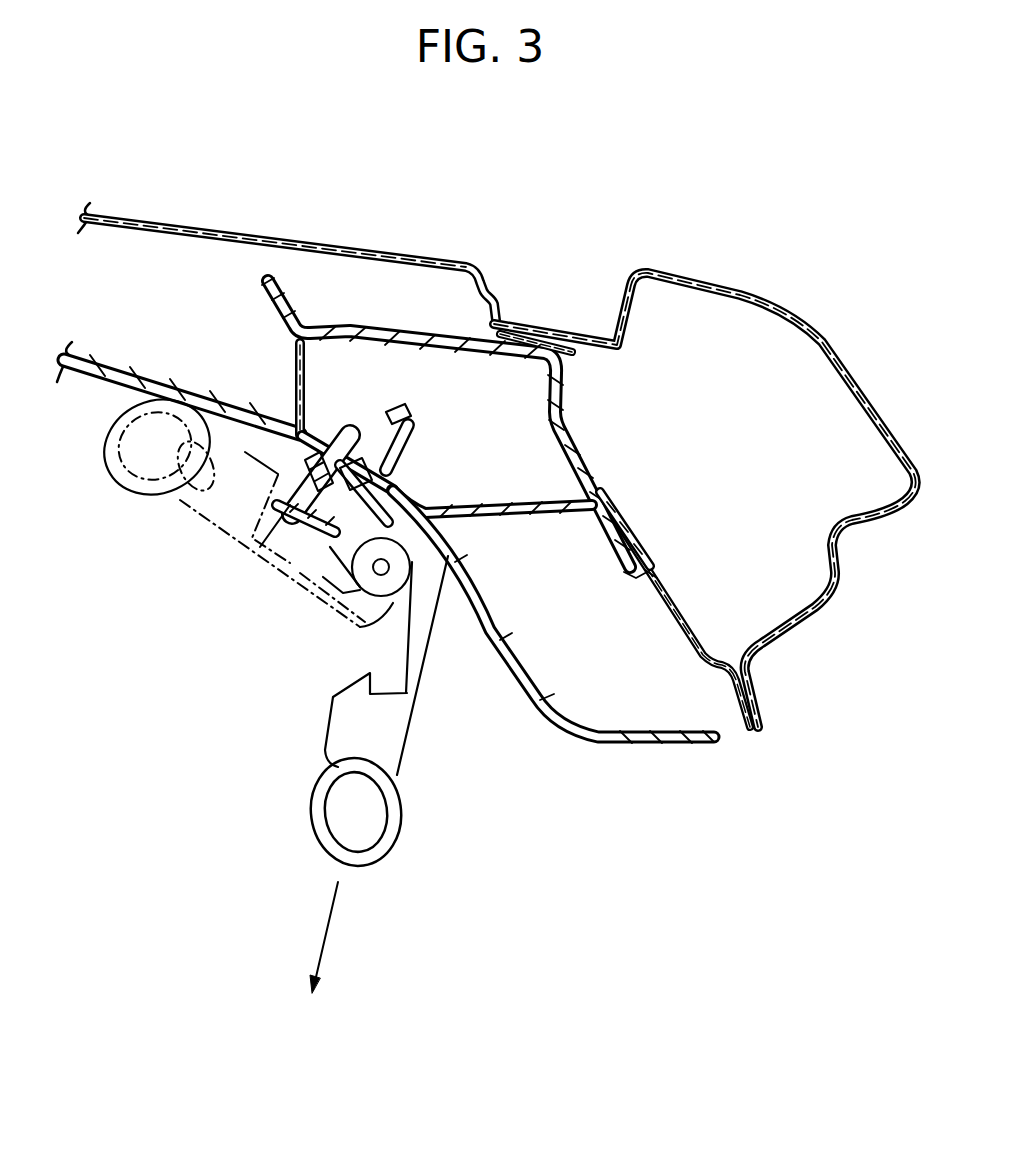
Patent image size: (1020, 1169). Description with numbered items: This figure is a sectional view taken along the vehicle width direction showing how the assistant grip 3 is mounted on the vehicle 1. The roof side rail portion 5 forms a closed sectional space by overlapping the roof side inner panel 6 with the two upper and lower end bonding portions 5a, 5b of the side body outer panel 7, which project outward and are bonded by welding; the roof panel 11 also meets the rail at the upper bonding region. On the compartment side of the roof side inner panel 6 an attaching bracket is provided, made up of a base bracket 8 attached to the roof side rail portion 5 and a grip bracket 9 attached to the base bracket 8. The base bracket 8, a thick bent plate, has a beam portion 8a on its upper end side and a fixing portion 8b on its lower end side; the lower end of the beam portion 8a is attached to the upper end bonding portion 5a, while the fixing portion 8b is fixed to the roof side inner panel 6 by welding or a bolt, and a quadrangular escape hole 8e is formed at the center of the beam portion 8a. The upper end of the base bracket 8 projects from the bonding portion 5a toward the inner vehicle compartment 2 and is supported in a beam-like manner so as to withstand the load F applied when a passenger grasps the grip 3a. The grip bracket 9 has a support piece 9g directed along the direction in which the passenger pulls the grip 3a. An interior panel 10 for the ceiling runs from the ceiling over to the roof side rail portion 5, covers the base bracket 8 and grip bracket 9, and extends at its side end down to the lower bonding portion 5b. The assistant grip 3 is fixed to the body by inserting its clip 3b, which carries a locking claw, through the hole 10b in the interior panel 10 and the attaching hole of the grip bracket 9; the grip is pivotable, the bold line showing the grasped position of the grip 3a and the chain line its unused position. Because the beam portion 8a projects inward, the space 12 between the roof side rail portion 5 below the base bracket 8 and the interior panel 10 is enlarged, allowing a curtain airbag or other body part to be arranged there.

The vehicle 1 is at (545, 244).
The inner vehicle compartment 2 is at (256, 604).
The assistant grip 3 is at (370, 578).
The grip 3a is at (412, 743).
The clip 3b is at (425, 408).
The roof side rail portion 5 is at (698, 275).
The upper end bonding portion 5a is at (551, 323).
The lower end bonding portion 5b is at (760, 694).
The roof side inner panel 6 is at (684, 610).
The side body outer panel 7 is at (812, 335).
The base bracket 8 is at (468, 390).
The beam portion 8a is at (353, 334).
The fixing portion 8b is at (618, 515).
The escape hole 8e is at (397, 330).
The grip bracket 9 is at (408, 459).
The support piece 9g is at (297, 369).
The interior panel 10 is at (553, 625).
The hole 10b is at (392, 487).
The roof panel 11 is at (266, 235).
The space 12 is at (606, 635).
The load F is at (333, 925).